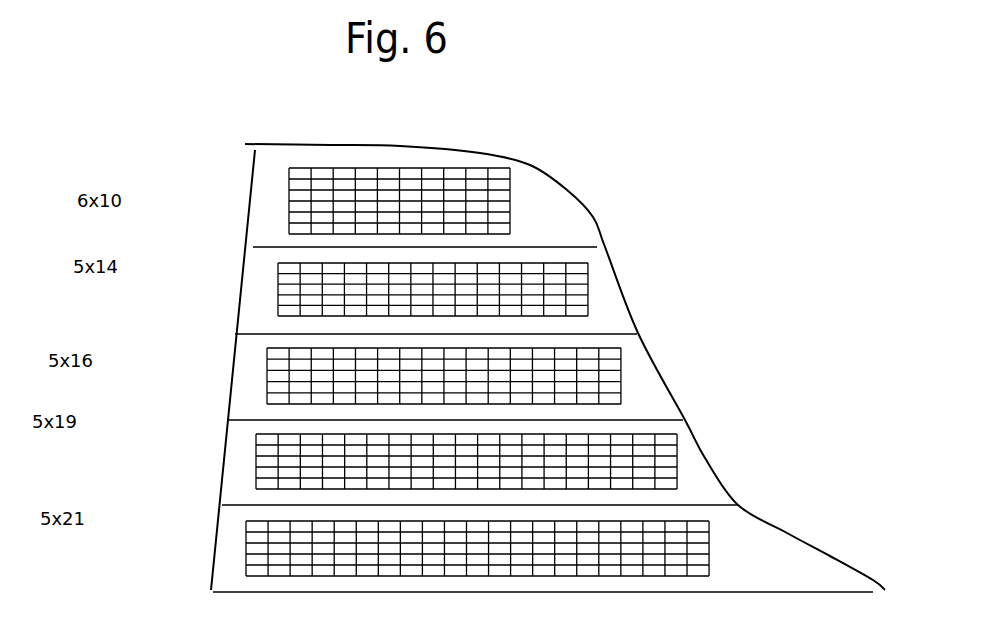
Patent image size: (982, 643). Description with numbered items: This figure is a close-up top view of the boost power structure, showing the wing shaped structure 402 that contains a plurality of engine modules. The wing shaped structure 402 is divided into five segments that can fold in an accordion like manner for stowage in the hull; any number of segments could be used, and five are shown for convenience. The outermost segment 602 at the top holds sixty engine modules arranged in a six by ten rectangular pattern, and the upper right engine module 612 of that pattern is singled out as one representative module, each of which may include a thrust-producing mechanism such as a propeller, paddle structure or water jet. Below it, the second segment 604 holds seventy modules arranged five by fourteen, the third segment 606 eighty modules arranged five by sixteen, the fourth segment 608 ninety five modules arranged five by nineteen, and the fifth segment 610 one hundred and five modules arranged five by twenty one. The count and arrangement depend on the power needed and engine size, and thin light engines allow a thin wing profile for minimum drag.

The wing shaped structure 402 is at (705, 458).
The outermost segment 602 is at (360, 170).
The second segment 604 is at (223, 245).
The third segment 606 is at (211, 334).
The fourth segment 608 is at (201, 420).
The fifth segment 610 is at (190, 508).
The engine module 612 is at (503, 167).